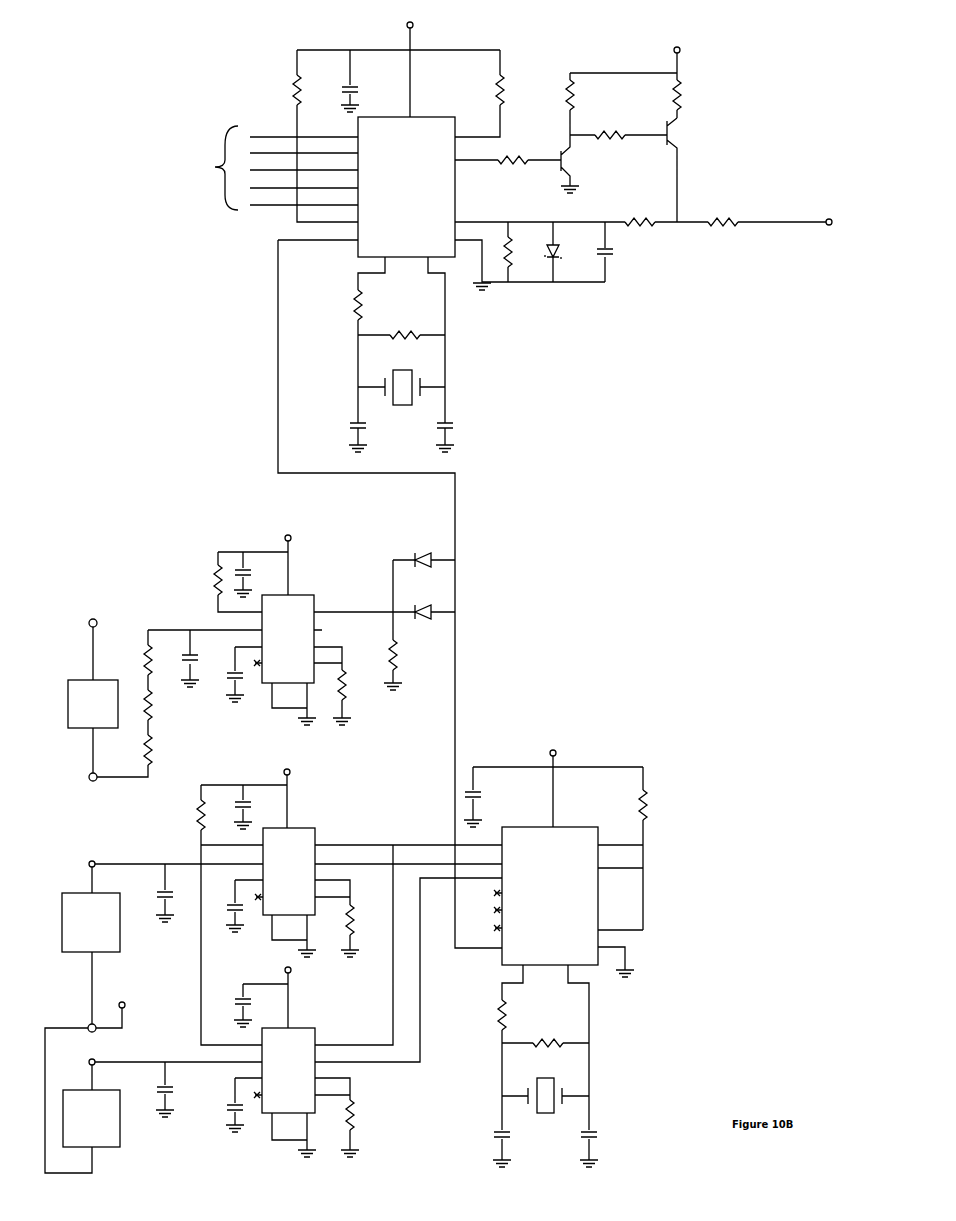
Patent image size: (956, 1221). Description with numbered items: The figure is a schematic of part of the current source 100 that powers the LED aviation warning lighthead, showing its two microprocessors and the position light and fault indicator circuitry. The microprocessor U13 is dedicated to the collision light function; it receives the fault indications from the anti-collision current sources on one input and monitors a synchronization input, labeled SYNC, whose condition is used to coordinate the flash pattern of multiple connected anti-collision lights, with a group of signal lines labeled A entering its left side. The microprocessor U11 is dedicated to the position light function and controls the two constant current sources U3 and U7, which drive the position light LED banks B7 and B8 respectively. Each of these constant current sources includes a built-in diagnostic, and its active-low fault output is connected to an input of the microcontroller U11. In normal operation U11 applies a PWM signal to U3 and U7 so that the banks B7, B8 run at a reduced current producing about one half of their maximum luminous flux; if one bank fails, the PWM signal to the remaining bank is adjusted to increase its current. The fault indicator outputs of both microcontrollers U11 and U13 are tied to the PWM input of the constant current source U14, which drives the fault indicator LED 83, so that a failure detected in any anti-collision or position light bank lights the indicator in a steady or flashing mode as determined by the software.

The current source 100 is at (517, 497).
The fault indicator LED 83 is at (106, 721).
The position light LED bank B7 is at (91, 922).
The position light LED bank B8 is at (91, 1118).
The input signals A is at (208, 168).
The microprocessor U13 is at (406, 187).
The constant current source U14 is at (288, 639).
The constant current source U3 is at (289, 871).
The constant current source U7 is at (288, 1070).
The microprocessor U11 is at (550, 896).